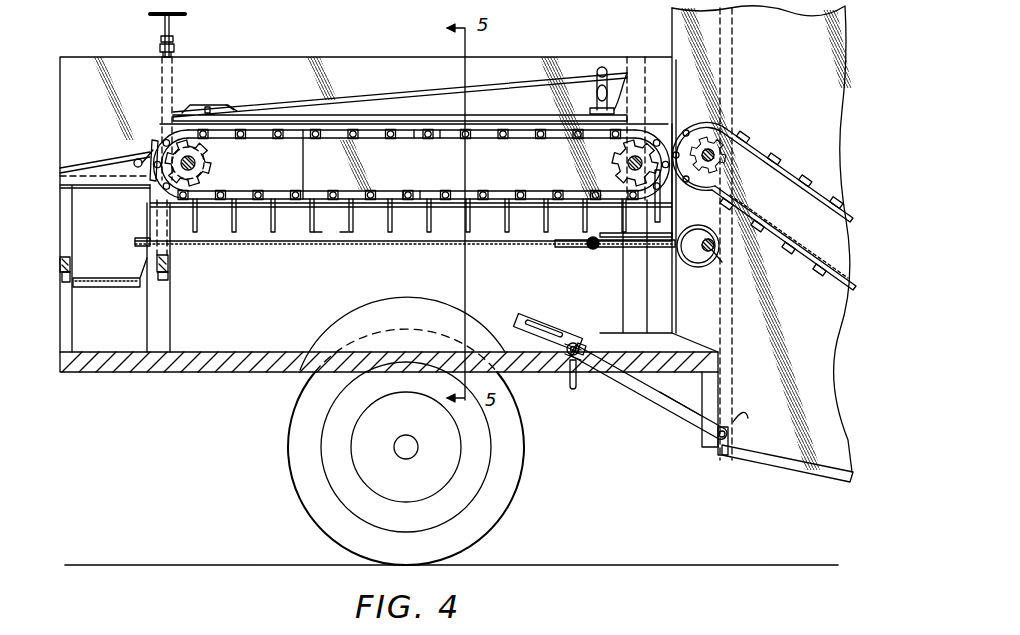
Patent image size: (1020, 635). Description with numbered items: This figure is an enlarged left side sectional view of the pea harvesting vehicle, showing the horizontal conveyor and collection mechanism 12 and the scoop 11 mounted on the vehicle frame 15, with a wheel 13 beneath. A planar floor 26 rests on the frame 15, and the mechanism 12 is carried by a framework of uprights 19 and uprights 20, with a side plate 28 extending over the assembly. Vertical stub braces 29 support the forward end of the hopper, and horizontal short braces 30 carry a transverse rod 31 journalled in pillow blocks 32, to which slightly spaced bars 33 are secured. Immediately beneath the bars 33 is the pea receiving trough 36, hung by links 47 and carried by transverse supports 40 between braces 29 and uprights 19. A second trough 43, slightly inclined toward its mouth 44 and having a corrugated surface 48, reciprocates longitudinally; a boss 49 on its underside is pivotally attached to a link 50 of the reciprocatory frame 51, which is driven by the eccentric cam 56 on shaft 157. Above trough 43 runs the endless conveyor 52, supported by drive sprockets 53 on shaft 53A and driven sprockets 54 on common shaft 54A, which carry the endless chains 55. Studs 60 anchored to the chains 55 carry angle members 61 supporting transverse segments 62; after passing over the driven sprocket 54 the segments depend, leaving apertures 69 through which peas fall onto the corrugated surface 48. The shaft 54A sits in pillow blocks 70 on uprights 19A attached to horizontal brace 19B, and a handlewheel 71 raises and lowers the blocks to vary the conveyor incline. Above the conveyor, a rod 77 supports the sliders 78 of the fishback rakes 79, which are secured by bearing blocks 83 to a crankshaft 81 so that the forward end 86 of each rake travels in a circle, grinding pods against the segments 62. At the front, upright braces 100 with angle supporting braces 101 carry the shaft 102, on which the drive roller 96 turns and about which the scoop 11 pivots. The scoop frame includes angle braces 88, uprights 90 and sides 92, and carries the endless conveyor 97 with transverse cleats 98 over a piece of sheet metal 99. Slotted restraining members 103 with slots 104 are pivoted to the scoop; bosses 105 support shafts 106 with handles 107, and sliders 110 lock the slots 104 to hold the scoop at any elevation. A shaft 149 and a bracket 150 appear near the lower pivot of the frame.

The scoop 11 is at (825, 473).
The horizontal conveyor and collection mechanism 12 is at (352, 57).
The wheel 13 is at (297, 488).
The vehicle frame 15 is at (224, 372).
The uprights 19 is at (170, 340).
The uprights 19A is at (173, 72).
The horizontal brace 19B is at (162, 42).
The uprights 20 is at (623, 287).
The planar floor 26 is at (270, 352).
The side plates 28 is at (287, 62).
The stub braces 29 is at (72, 340).
The horizontal short braces 30 is at (90, 187).
The transverse rod 31 is at (139, 168).
The pillow blocks 32 is at (151, 152).
The bars 33 is at (90, 162).
The pea receiving trough 36 is at (112, 284).
The transverse supports 40 is at (70, 258).
The second trough 43 is at (268, 250).
The mouth 44 is at (140, 240).
The links 47 is at (68, 282).
The corrugated surface 48 is at (345, 240).
The boss 49 is at (590, 249).
The link 50 is at (610, 248).
The reciprocatory frame 51 is at (682, 258).
The endless conveyor 52 is at (411, 182).
The drive sprockets 53 is at (637, 132).
The shaft 53A is at (628, 160).
The driven sprockets 54 is at (160, 138).
The common shaft 54A is at (200, 160).
The endless chains 55 is at (303, 190).
The eccentric cam 56 is at (698, 262).
The studs 60 is at (384, 195).
The angle members 61 is at (537, 196).
The segments 62 is at (420, 207).
The apertures 69 is at (290, 212).
The pillow blocks 70 is at (215, 180).
The handlewheel 71 is at (185, 14).
The rod 77 is at (210, 106).
The sliders 78 is at (232, 105).
The fishback rakes 79 is at (399, 115).
The crankshaft 81 is at (599, 70).
The bearing blocks 83 is at (606, 70).
The forward end 86 is at (620, 105).
The angle braces 88 is at (800, 465).
The uprights 90 is at (733, 50).
The sides 92 is at (845, 403).
The drive roller 96 is at (725, 152).
The endless conveyor 97 is at (820, 198).
The transverse cleats 98 is at (806, 180).
The sheet metal 99 is at (822, 240).
The upright braces 100 is at (698, 333).
The angle supporting braces 101 is at (670, 420).
The shaft 102 is at (722, 135).
The restraining members 103 is at (640, 392).
The slot 104 is at (533, 322).
The bosses 105 is at (584, 340).
The shafts 106 is at (569, 356).
The handles 107 is at (574, 390).
The slider 110 is at (573, 338).
The shaft 149 is at (748, 418).
The bracket 150 is at (738, 410).
The shaft 157 is at (718, 258).